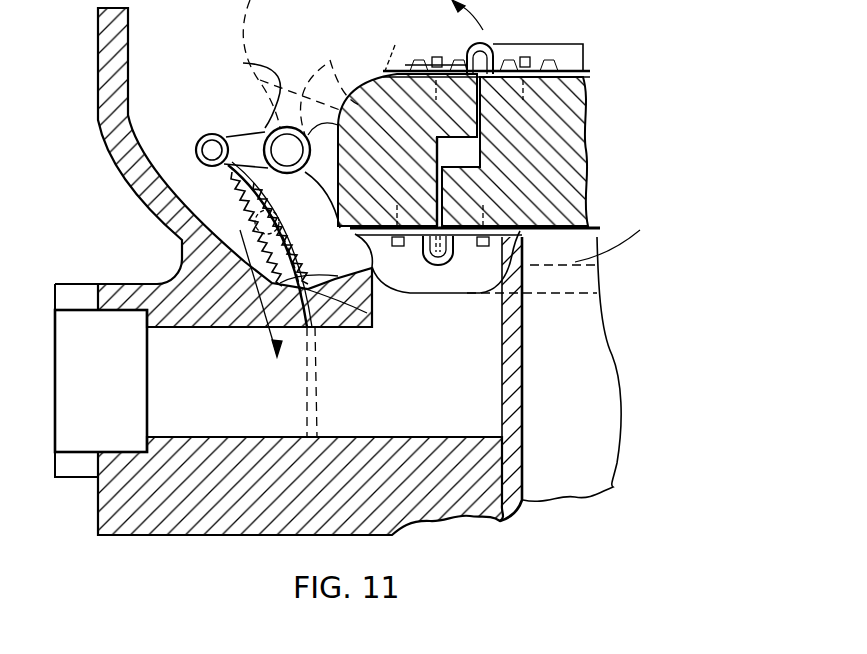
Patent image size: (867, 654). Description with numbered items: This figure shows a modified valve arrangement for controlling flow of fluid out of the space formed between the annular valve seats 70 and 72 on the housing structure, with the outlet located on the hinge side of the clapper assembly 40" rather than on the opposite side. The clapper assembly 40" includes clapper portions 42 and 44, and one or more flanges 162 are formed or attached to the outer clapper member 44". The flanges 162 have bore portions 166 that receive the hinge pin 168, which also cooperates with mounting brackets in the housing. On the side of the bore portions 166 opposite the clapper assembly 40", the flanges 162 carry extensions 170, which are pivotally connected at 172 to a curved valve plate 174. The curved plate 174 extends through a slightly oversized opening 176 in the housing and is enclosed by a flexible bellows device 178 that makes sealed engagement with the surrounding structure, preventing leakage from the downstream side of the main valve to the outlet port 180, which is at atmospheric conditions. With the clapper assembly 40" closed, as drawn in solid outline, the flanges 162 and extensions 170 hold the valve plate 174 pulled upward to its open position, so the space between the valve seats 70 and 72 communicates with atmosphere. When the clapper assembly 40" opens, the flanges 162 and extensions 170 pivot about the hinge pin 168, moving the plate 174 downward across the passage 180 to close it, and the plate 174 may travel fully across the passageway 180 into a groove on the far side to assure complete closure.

The clapper assembly 40 is at (518, 128).
The clapper portion 42 is at (578, 68).
The outer clapper member 44 is at (401, 68).
The annular valve seat 70 is at (555, 262).
The annular valve seat 72 is at (372, 271).
The flange 162 is at (318, 78).
The bore portion 166 is at (250, 63).
The hinge pin 168 is at (270, 128).
The extension 170 is at (242, 137).
The pivotal connection 172 is at (205, 144).
The curved valve plate 174 is at (296, 255).
The opening 176 is at (358, 306).
The flexible bellows device 178 is at (236, 196).
The outlet port 180 is at (256, 417).